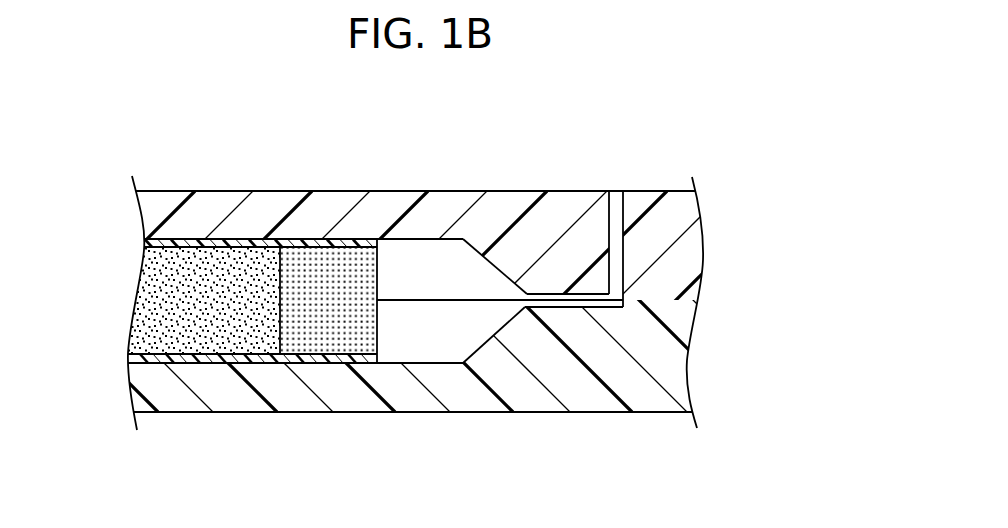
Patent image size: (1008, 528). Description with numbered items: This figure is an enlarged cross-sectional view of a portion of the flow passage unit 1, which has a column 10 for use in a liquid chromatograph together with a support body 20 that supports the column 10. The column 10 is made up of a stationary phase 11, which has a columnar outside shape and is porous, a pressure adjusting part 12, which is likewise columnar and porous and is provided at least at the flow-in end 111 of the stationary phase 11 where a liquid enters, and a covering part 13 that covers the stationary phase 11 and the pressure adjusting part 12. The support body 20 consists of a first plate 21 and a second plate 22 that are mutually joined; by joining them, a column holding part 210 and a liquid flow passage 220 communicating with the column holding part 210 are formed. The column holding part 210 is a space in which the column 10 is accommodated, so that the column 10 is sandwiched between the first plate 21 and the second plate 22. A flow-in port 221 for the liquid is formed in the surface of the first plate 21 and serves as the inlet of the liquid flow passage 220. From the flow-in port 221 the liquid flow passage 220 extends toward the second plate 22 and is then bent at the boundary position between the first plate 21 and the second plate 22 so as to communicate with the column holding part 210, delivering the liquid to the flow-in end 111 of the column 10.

The flow passage unit 1 is at (439, 266).
The column 10 is at (248, 296).
The stationary phase 11 is at (226, 318).
The pressure adjusting part 12 is at (320, 318).
The covering part 13 is at (167, 360).
The flow-in end 111 is at (281, 287).
The support body 20 is at (439, 301).
The first plate 21 is at (670, 263).
The second plate 22 is at (419, 349).
The column holding part 210 is at (428, 277).
The liquid flow passage 220 is at (596, 212).
The flow-in port 221 is at (616, 200).